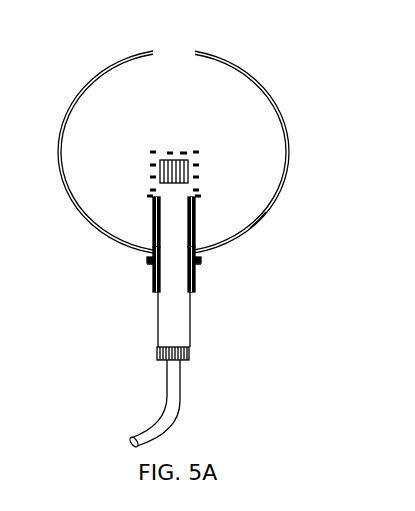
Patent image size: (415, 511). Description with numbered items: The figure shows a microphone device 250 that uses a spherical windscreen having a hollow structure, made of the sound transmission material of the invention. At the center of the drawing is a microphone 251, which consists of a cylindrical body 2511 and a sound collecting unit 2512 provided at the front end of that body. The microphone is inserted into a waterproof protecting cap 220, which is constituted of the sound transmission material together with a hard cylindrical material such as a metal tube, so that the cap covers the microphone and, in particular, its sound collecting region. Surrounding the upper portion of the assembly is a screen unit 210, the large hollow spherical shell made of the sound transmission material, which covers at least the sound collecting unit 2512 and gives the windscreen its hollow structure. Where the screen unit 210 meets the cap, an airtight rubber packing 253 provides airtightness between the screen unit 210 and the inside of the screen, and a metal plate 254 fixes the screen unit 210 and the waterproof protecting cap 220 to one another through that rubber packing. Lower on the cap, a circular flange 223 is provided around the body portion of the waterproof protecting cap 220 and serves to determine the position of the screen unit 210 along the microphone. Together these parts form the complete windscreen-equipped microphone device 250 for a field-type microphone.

The microphone device 250 is at (44, 28).
The screen unit 210 is at (249, 77).
The waterproof protecting cap 220 is at (258, 222).
The microphone 251 is at (106, 236).
The sound collecting unit 2512 is at (153, 218).
The cylindrical body 2511 is at (156, 316).
The airtight rubber packing 253 is at (200, 263).
The metal plate 254 is at (201, 258).
The circular flange 223 is at (194, 286).